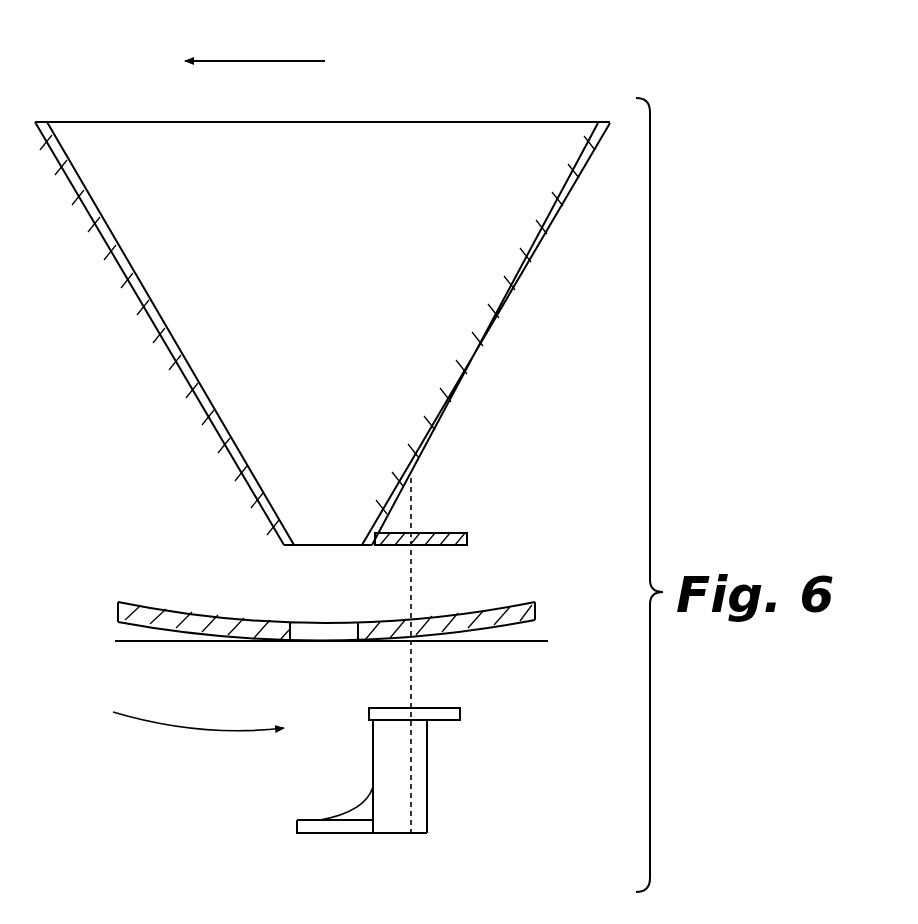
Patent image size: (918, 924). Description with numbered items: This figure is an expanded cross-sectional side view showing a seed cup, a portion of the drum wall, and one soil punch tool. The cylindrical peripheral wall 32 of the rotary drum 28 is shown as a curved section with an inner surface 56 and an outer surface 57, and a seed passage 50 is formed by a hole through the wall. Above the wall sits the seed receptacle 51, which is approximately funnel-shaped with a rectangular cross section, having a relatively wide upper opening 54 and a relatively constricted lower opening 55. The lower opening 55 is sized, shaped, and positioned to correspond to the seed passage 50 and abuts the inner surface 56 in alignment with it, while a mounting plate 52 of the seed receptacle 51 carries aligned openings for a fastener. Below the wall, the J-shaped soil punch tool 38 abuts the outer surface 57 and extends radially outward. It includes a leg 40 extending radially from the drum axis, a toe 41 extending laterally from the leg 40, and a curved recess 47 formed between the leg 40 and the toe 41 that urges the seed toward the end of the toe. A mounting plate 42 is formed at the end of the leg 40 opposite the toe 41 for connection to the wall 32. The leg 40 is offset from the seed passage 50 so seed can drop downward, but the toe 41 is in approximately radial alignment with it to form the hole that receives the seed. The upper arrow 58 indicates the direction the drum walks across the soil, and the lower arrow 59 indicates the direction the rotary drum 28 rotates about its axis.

The rotary drum 28 is at (158, 646).
The cylindrical peripheral wall 32 is at (172, 616).
The soil punch tool 38 is at (389, 739).
The leg 40 is at (393, 757).
The toe 41 is at (320, 826).
The mounting plate 42 is at (440, 707).
The curved recess 47 is at (350, 800).
The seed passage 50 is at (310, 630).
The seed receptacle 51 is at (148, 353).
The mounting plate of the seed receptacle 52 is at (453, 532).
The upper opening 54 is at (333, 170).
The lower opening 55 is at (338, 522).
The inner surface 56 is at (498, 604).
The outer surface 57 is at (512, 645).
The upper arrow 58 is at (258, 60).
The lower arrow 59 is at (205, 728).